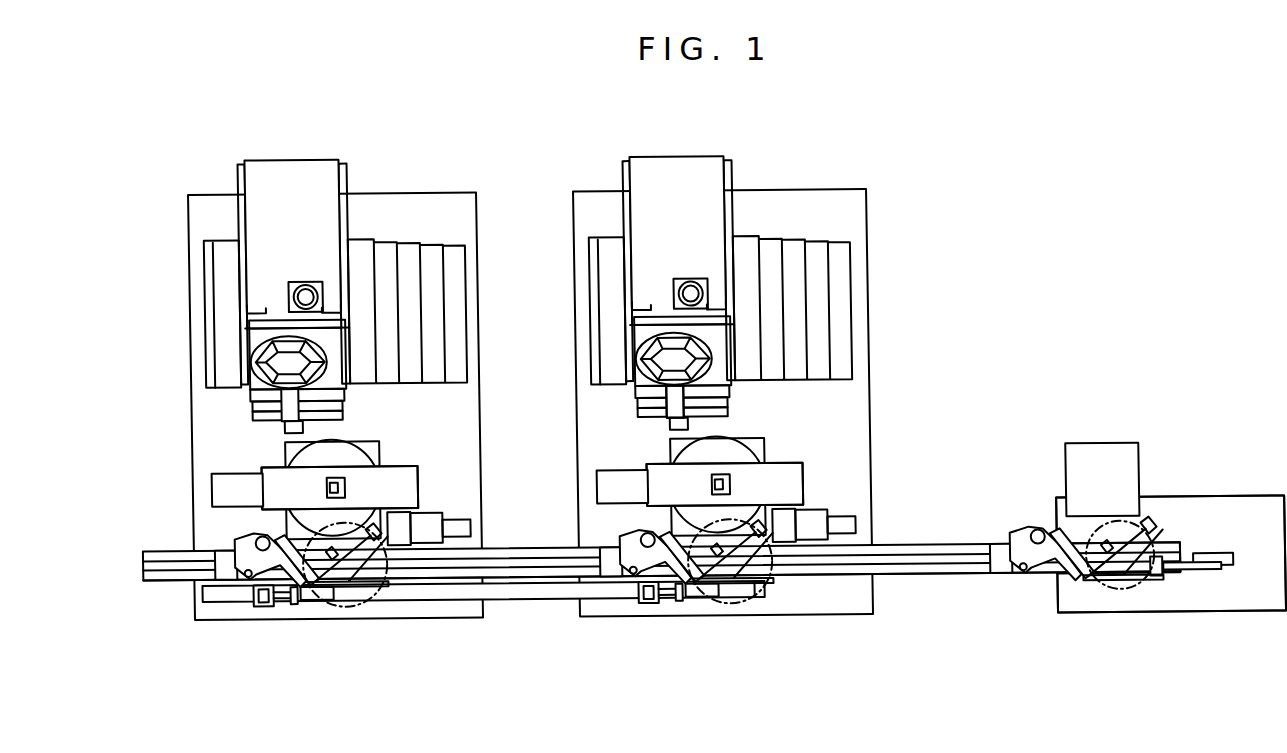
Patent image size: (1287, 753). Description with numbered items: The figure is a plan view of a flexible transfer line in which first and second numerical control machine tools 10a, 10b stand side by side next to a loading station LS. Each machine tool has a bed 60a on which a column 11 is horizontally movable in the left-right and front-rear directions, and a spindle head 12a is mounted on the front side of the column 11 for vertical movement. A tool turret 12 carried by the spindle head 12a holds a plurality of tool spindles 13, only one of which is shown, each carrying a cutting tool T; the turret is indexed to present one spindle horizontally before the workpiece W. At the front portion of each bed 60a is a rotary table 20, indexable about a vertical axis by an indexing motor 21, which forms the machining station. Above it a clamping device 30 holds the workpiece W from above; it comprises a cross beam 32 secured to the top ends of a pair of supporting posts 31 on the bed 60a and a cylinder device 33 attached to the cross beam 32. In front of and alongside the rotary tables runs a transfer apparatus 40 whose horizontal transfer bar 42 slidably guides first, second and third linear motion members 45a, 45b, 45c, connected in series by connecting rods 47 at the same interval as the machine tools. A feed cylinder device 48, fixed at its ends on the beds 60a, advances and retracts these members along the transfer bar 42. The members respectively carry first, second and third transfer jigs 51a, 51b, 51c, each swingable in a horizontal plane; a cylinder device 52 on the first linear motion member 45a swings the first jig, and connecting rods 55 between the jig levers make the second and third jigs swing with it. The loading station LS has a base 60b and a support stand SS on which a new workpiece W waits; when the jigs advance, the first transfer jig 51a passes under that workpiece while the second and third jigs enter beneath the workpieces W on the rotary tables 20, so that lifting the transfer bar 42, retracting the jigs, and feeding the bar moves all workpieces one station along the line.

The first numerical control machine tool 10a is at (741, 169).
The second numerical control machine tool 10b is at (356, 169).
The column 11 is at (277, 177).
The tool turret 12 is at (255, 362).
The spindle head 12a is at (255, 340).
The tool spindle 13 is at (286, 410).
The cutting tool T is at (648, 438).
The rotary table 20 is at (356, 458).
The indexing motor 21 is at (455, 527).
The clamping device 30 is at (437, 476).
The supporting post 31 is at (229, 476).
The cross beam 32 is at (405, 469).
The cylinder device 33 is at (341, 490).
The transfer apparatus 40 is at (995, 517).
The transfer bar 42 is at (1167, 552).
The first linear motion member 45a is at (1004, 585).
The second linear motion member 45b is at (621, 582).
The third linear motion member 45c is at (227, 587).
The connecting rod 47 is at (166, 551).
The feed cylinder device 48 is at (552, 623).
The first transfer jig 51a is at (1077, 586).
The second transfer jig 51b is at (702, 588).
The third transfer jig 51c is at (319, 588).
The cylinder device 52 is at (1199, 549).
The connecting rod 55 is at (166, 581).
The bed 60a is at (428, 612).
The loading station base 60b is at (1202, 610).
The support stand SS is at (1069, 461).
The loading station LS is at (1250, 477).
The workpiece W is at (362, 607).